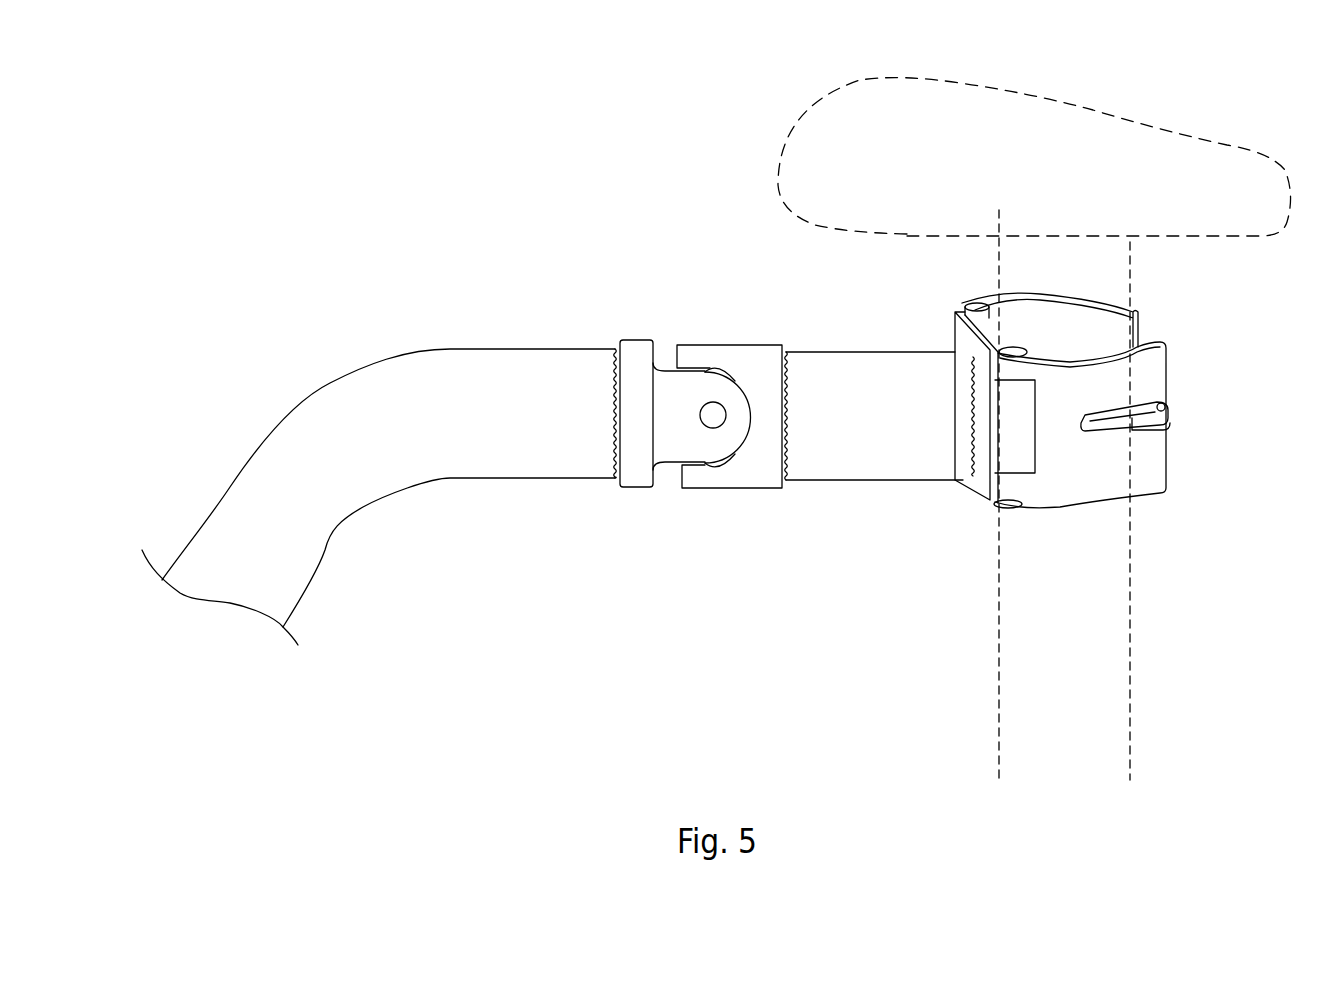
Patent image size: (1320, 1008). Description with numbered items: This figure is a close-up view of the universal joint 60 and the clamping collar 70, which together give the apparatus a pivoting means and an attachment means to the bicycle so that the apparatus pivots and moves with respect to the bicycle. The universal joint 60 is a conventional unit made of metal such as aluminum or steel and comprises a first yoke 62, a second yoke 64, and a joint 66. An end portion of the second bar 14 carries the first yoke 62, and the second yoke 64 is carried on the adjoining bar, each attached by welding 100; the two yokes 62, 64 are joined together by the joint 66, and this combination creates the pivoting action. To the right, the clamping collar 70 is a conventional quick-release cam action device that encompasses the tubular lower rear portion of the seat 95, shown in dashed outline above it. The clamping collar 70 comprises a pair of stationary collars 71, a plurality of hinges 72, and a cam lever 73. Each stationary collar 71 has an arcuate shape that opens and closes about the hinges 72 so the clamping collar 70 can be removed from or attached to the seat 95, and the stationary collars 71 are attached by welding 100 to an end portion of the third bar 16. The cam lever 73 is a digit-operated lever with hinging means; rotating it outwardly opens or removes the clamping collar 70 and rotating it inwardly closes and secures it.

The second bar 14 is at (437, 405).
The third bar 16 is at (876, 400).
The universal joint 60 is at (520, 280).
The first yoke 62 is at (638, 473).
The second yoke 64 is at (748, 473).
The joint 66 is at (722, 460).
The clamping collar 70 is at (933, 282).
The stationary collar 71 is at (1090, 330).
The hinge 72 is at (1012, 350).
The cam lever 73 is at (1130, 423).
The seat 95 is at (850, 115).
The welding 100 is at (613, 378).